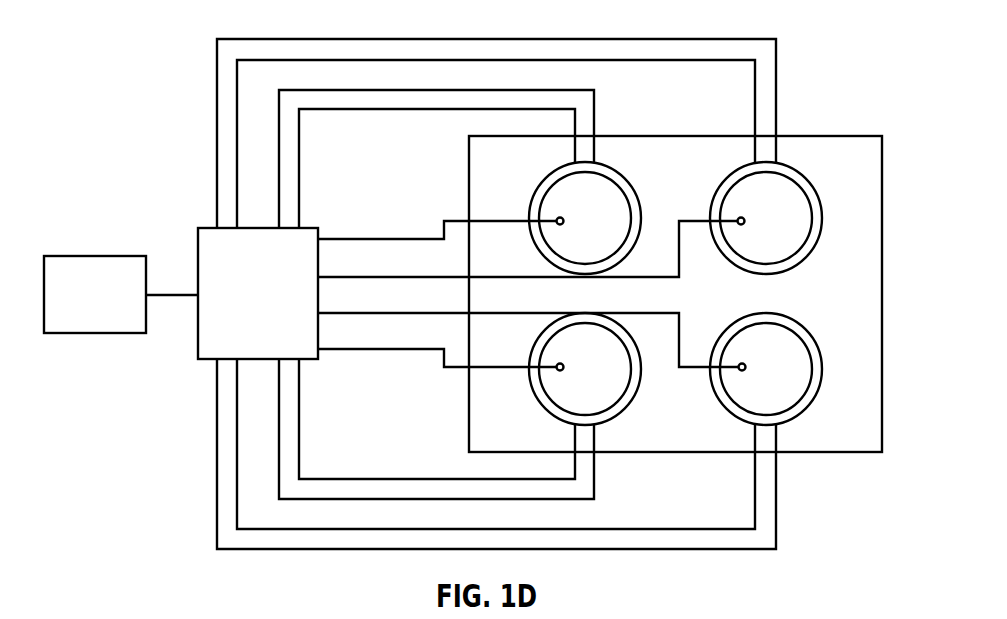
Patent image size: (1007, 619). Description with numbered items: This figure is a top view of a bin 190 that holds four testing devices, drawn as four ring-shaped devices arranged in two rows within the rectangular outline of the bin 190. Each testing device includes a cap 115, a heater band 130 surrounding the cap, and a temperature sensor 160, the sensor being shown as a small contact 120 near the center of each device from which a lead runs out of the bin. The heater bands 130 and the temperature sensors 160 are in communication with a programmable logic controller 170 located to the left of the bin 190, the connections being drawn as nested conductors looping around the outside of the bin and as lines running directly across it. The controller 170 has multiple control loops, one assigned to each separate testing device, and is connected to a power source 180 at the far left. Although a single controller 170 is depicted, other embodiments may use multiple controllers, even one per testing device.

The cap 115 is at (787, 230).
The contact terminal 120 is at (738, 226).
The heater band 130 is at (793, 168).
The temperature sensor 160 is at (698, 220).
The programmable logic controller 170 is at (281, 307).
The power source 180 is at (117, 307).
The bin 190 is at (882, 293).